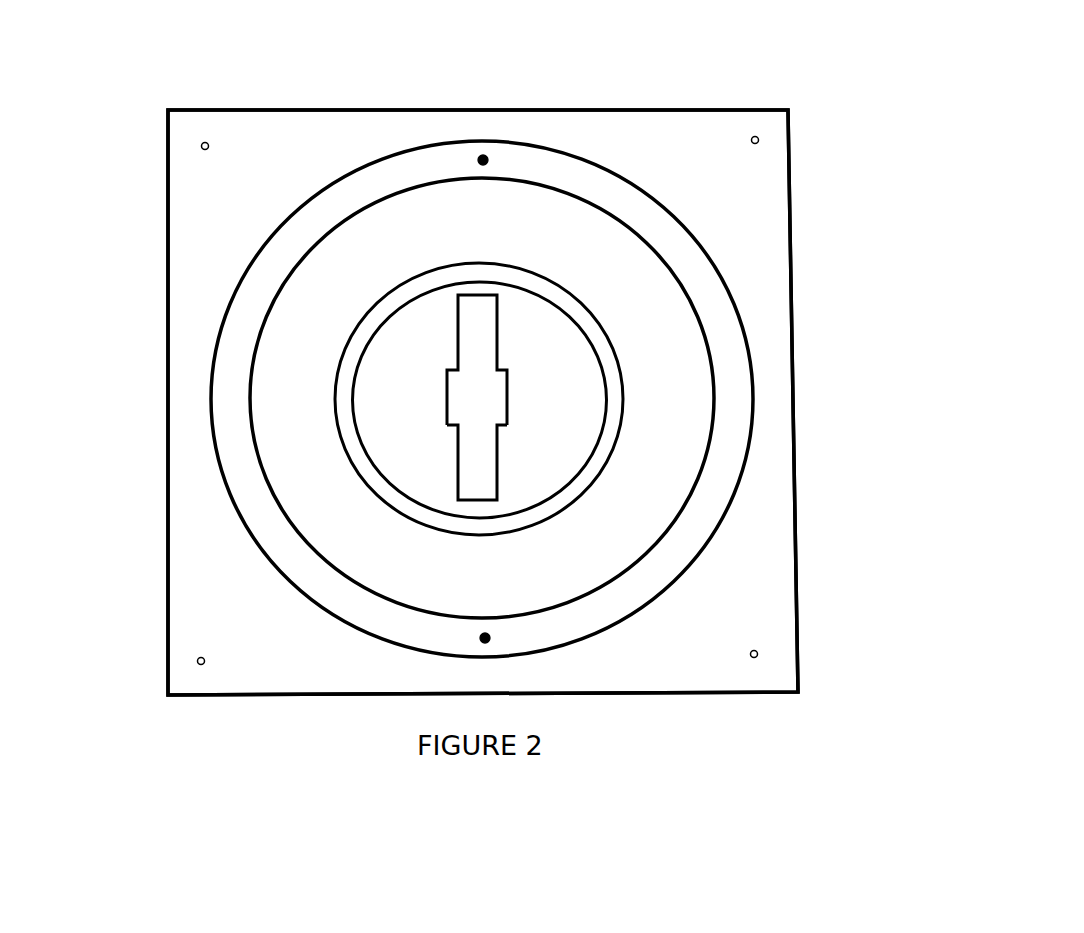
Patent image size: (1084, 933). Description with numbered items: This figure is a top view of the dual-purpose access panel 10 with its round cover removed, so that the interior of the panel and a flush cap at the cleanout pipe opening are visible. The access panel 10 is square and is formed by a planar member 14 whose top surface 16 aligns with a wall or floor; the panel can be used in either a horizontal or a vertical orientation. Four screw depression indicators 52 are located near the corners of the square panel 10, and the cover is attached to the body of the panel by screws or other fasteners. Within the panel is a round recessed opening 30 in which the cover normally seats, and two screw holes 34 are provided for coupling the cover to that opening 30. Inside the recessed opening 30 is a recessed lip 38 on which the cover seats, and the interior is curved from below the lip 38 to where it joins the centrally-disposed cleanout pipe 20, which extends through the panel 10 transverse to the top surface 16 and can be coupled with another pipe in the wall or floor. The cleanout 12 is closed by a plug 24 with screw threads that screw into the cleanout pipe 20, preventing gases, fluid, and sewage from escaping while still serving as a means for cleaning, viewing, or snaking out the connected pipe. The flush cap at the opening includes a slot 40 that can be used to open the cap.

The access panel 10 is at (505, 447).
The cleanout 12 is at (543, 475).
The planar member 14 is at (723, 583).
The top surface 16 is at (770, 297).
The cleanout pipe 20 is at (610, 367).
The plug 24 is at (417, 430).
The recessed opening 30 is at (212, 452).
The screw holes 34 is at (483, 158).
The recessed lip 38 is at (297, 573).
The slot 40 is at (477, 442).
The screw depression indicators 52 is at (201, 146).